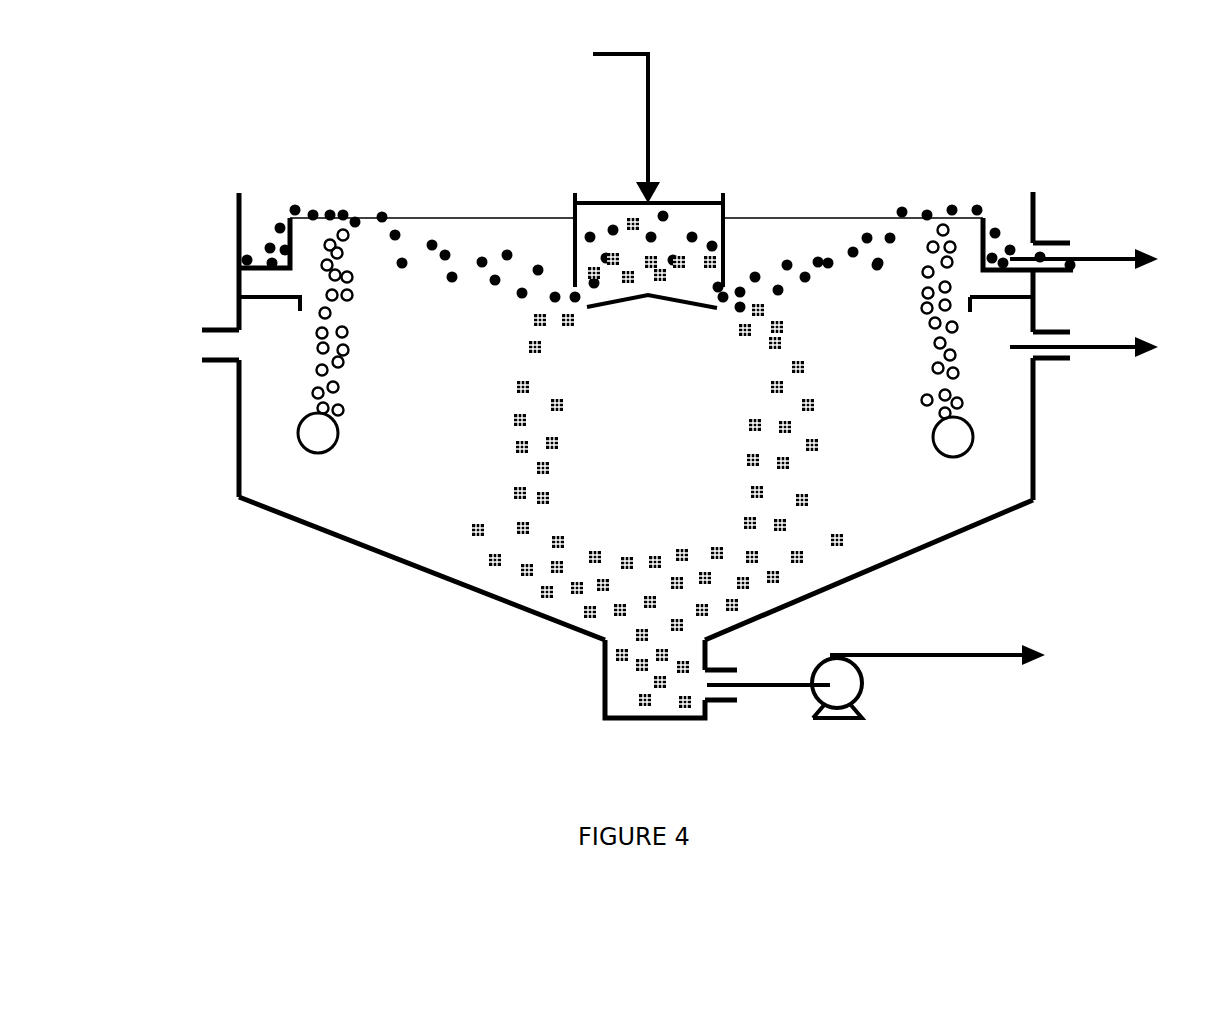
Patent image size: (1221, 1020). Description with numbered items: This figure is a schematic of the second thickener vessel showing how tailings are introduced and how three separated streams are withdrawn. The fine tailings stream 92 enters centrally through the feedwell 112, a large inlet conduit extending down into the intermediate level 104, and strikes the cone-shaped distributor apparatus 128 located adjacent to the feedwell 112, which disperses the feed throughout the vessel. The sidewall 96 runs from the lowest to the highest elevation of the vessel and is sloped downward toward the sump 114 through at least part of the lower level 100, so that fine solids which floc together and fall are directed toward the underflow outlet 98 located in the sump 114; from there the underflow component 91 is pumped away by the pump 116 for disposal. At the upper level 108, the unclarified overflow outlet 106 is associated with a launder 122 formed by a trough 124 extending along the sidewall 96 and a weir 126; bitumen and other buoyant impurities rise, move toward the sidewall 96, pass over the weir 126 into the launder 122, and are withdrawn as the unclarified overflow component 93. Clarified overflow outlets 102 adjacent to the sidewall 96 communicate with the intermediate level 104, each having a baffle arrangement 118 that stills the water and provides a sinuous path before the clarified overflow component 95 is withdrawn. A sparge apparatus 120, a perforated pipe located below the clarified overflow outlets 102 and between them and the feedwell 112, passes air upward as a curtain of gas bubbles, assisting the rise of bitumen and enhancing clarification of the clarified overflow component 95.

The underflow component 91 is at (767, 678).
The fine tailings stream 92 is at (600, 123).
The unclarified overflow component 93 is at (1180, 260).
The clarified overflow component 95 is at (1103, 349).
The sidewall 96 is at (888, 565).
The underflow outlet 98 is at (720, 708).
The lower level 100 is at (643, 580).
The clarified overflow outlet 102 is at (215, 367).
The intermediate level 104 is at (440, 355).
The unclarified overflow outlet 106 is at (1050, 238).
The upper level 108 is at (370, 255).
The feedwell 112 is at (732, 210).
The sump 114 is at (600, 697).
The pump 116 is at (863, 697).
The baffle arrangement 118 is at (288, 305).
The sparge apparatus 120 is at (330, 445).
The launder 122 is at (1003, 223).
The trough 124 is at (1010, 233).
The weir 126 is at (980, 240).
The distributor apparatus 128 is at (672, 318).